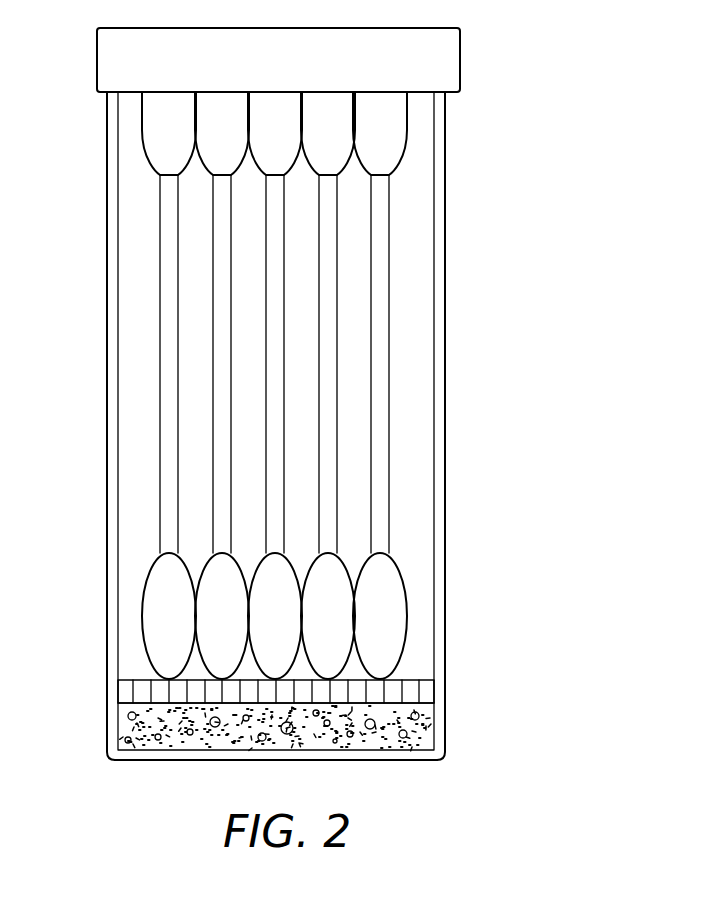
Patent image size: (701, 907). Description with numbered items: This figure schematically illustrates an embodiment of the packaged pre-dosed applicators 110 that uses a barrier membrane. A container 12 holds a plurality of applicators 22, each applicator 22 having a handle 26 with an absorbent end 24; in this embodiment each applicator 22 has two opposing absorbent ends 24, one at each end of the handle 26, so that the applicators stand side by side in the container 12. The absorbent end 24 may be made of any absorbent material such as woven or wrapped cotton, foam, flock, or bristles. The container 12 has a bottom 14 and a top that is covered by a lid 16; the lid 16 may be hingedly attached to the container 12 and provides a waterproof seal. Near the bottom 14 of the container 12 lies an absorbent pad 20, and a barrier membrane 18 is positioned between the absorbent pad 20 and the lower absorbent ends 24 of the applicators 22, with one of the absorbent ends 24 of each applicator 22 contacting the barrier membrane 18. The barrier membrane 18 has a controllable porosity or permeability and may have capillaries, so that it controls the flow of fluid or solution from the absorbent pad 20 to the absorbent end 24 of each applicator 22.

The packaged pre-dosed applicators 110 is at (500, 152).
The container 12 is at (107, 380).
The bottom 14 is at (130, 762).
The lid 16 is at (460, 58).
The barrier membrane 18 is at (425, 693).
The absorbent pad 20 is at (423, 736).
The applicator 22 is at (408, 400).
The absorbent end 24 is at (142, 140).
The handle 26 is at (387, 297).